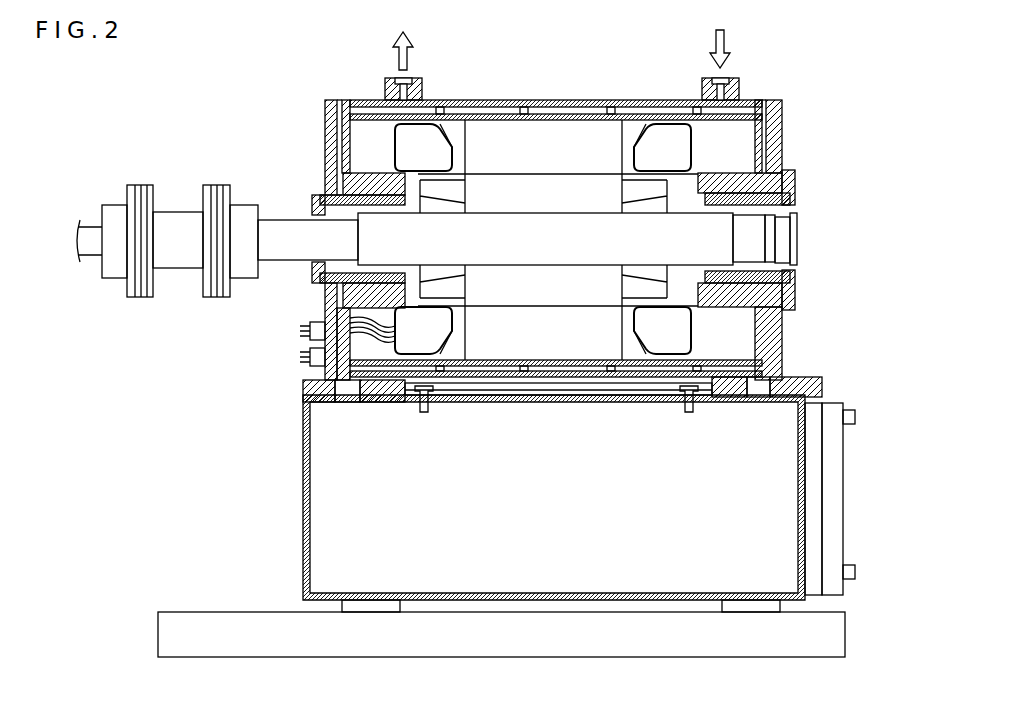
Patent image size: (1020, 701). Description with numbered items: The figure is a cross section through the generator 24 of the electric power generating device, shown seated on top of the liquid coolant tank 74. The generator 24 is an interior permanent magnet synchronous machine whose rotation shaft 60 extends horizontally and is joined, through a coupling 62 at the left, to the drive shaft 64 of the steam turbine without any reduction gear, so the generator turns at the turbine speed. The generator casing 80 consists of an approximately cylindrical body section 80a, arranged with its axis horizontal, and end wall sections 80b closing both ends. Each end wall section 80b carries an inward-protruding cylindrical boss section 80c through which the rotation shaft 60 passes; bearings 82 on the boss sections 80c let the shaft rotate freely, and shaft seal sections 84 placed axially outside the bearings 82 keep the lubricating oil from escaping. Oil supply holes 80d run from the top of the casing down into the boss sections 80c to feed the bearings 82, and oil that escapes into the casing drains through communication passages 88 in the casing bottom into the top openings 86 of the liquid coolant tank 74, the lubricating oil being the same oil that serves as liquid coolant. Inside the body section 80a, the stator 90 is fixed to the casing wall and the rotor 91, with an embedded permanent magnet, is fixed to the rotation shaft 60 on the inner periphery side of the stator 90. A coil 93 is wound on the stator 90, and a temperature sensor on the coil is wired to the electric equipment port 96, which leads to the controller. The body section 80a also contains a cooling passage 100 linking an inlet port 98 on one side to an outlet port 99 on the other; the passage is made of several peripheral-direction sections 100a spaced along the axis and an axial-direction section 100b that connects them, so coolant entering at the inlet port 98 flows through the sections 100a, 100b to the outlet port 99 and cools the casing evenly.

The generator 24 is at (810, 131).
The rotation shaft 60 is at (275, 220).
The coupling 62 is at (178, 212).
The drive shaft 64 is at (90, 225).
The liquid coolant tank 74 is at (860, 465).
The generator casing 80 is at (638, 101).
The body section 80a is at (493, 100).
The end wall sections 80b is at (333, 150).
The boss sections 80c is at (378, 165).
The oil supply holes 80d is at (330, 103).
The bearings 82 is at (318, 283).
The shaft seal sections 84 is at (318, 197).
The top openings 86 is at (345, 402).
The communication passages 88 is at (368, 402).
The stator 90 is at (588, 345).
The rotor 91 is at (550, 295).
The coil 93 is at (447, 140).
The electric equipment port 96 is at (302, 328).
The inlet port 98 is at (704, 90).
The outlet port 99 is at (390, 88).
The cooling passage 100 is at (640, 42).
The peripheral-direction sections 100a is at (612, 100).
The axial-direction section 100b is at (540, 100).